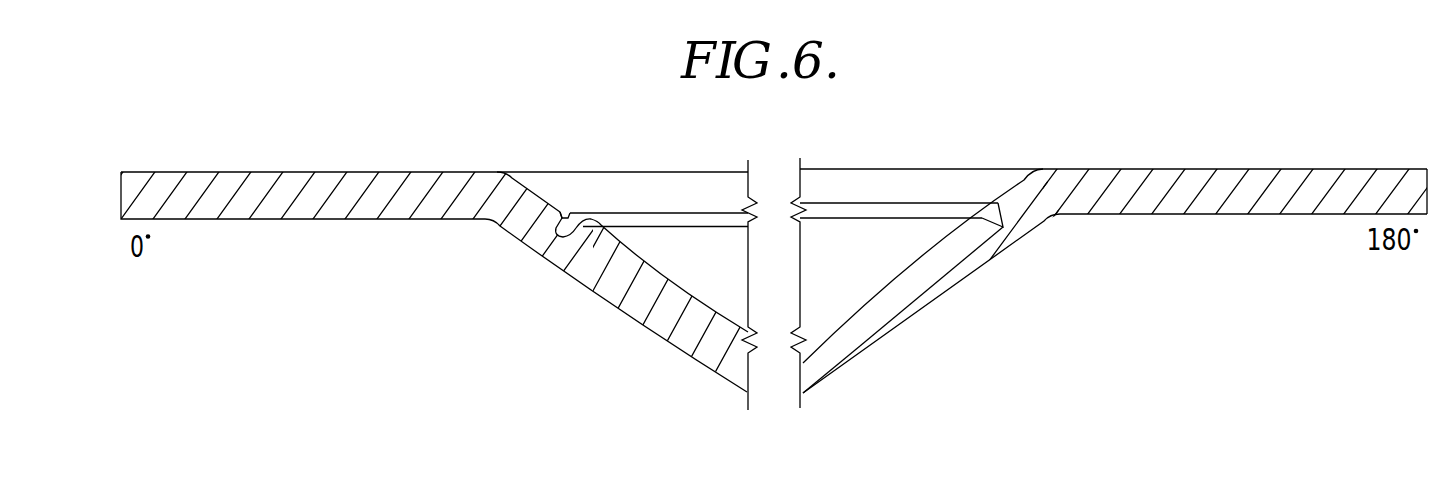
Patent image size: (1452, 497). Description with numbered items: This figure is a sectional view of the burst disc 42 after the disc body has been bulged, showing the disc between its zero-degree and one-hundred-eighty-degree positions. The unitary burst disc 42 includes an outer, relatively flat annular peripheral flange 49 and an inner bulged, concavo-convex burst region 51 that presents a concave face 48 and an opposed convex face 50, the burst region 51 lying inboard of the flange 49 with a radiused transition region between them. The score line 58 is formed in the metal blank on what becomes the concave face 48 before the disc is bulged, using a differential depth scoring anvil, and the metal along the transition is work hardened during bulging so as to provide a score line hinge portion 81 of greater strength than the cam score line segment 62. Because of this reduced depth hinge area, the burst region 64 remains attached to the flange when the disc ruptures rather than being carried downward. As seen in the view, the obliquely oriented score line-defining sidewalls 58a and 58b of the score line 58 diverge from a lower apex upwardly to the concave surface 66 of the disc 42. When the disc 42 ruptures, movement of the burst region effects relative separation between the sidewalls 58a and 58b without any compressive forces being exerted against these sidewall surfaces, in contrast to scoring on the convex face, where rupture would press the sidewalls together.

The burst disc 42 is at (346, 156).
The annular peripheral flange 49 is at (1284, 180).
The burst region 51 is at (688, 335).
The score line hinge portion 81 is at (552, 245).
The score line 58 is at (655, 193).
The score line-defining sidewall 58a is at (572, 211).
The score line-defining sidewall 58b is at (600, 222).
The concave face 48 is at (884, 287).
The convex face 50 is at (890, 343).
The burst region 64 is at (821, 367).
The concave surface 66 is at (990, 203).
The cam score line segment 62 is at (992, 184).